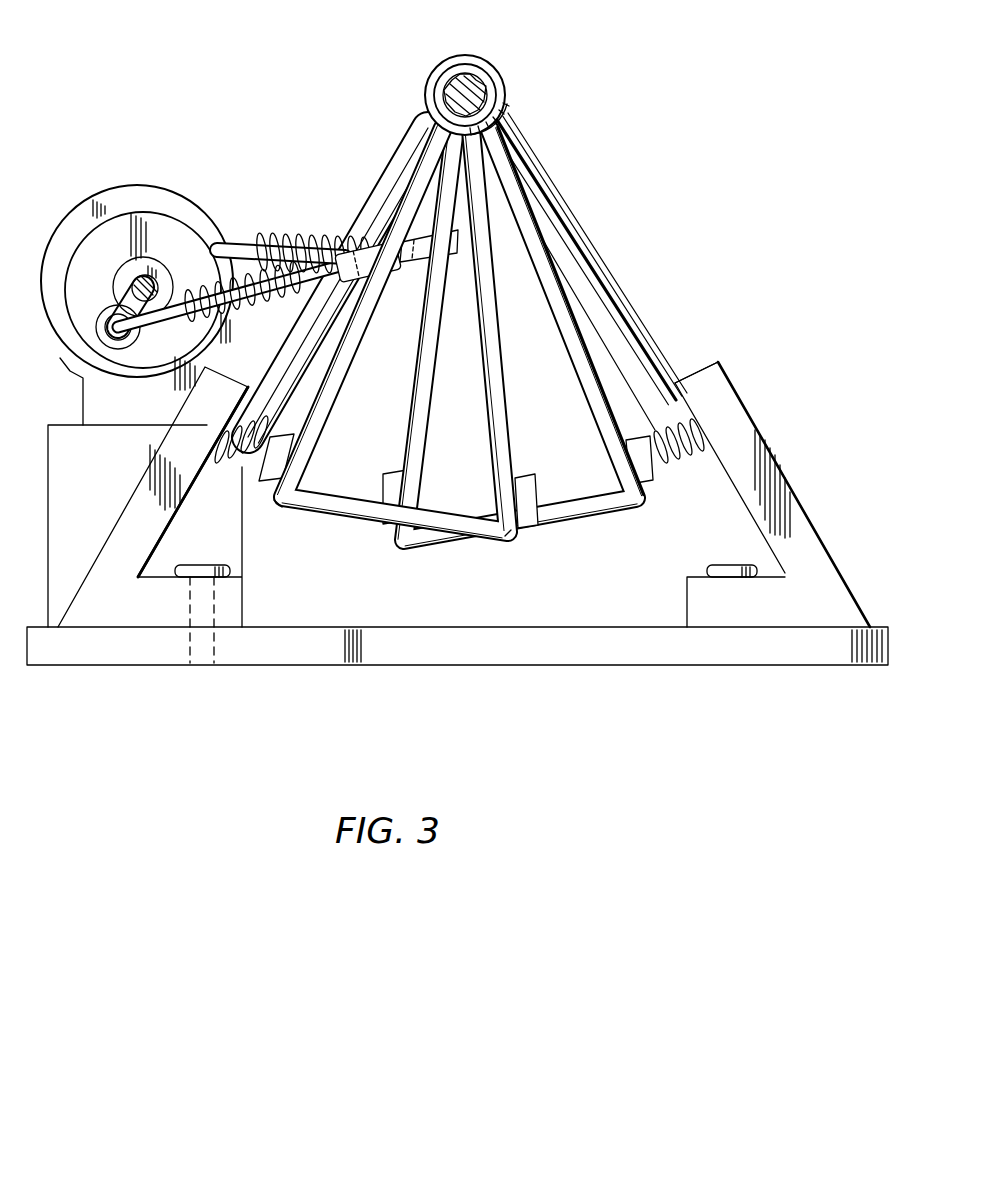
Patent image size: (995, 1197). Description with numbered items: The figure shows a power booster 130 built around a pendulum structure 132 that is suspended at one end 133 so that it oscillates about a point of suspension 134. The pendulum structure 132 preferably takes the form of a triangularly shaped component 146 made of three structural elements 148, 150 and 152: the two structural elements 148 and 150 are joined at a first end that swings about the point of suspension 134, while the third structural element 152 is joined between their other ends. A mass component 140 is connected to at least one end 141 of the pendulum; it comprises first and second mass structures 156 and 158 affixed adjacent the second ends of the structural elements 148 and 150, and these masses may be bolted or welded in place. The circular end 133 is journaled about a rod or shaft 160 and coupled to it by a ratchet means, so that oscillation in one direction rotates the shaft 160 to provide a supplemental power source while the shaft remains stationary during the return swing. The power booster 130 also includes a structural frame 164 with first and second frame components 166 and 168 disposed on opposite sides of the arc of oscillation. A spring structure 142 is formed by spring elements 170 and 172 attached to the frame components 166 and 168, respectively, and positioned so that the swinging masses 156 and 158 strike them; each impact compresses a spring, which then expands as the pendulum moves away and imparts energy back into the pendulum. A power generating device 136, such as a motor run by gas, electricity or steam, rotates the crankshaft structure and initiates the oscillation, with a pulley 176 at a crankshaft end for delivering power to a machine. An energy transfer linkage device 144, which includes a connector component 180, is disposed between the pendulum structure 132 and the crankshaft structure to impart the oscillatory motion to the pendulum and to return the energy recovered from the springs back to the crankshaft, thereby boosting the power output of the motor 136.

The power booster 130 is at (562, 186).
The pendulum structure 132 is at (383, 530).
The end of the pendulum structure 133 is at (427, 99).
The point of suspension 134 is at (516, 94).
The power generating device 136 is at (196, 191).
The mass component 140 is at (264, 498).
The end of the pendulum structure 141 is at (494, 541).
The spring structure 142 is at (226, 470).
The energy transfer linkage device 144 is at (291, 221).
The triangularly shaped component 146 is at (503, 441).
The structural element 148 is at (494, 373).
The structural element 150 is at (345, 360).
The third structural element 152 is at (347, 508).
The first mass structure 156 is at (530, 492).
The second mass structure 158 is at (280, 458).
The rod or shaft 160 is at (453, 80).
The structural frame 164 is at (356, 669).
The first frame component 166 is at (130, 543).
The second frame component 168 is at (777, 577).
The spring element 170 is at (231, 462).
The spring element 172 is at (668, 381).
The pulley 176 is at (164, 350).
The connector component 180 is at (318, 300).